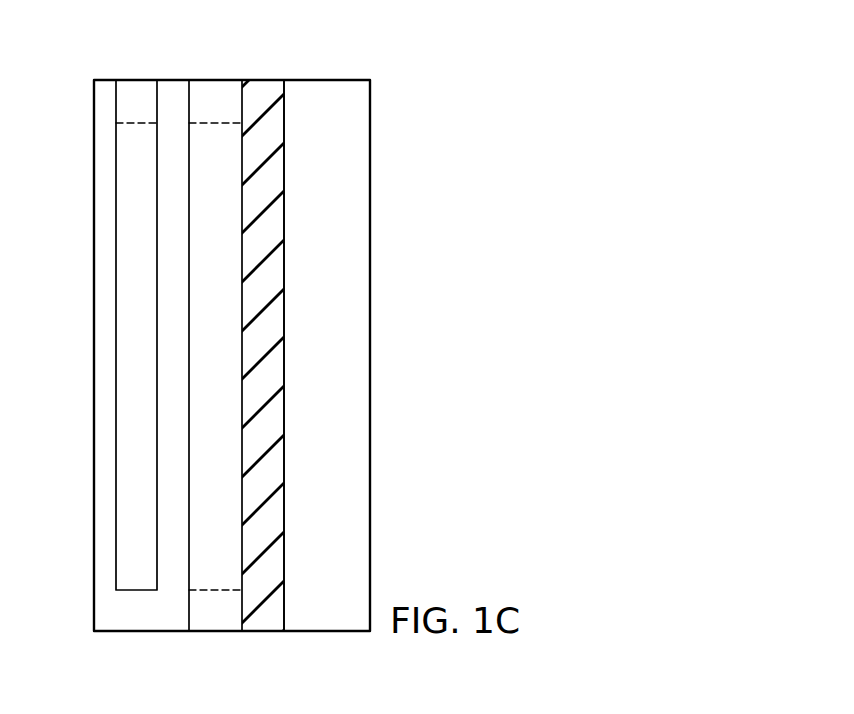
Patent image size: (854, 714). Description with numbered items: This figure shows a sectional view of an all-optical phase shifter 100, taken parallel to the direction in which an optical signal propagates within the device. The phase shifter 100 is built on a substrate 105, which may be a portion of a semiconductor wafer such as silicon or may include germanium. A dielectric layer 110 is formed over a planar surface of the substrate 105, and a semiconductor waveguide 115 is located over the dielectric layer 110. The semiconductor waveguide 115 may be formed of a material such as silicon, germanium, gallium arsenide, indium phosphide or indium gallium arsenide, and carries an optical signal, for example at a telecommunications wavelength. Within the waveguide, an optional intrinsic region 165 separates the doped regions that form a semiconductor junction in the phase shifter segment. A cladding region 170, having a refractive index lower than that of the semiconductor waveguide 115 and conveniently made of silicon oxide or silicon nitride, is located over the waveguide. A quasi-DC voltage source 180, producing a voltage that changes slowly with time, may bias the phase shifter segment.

The all-optical phase shifter 100 is at (418, 55).
The substrate 105 is at (328, 88).
The dielectric layer 110 is at (265, 622).
The semiconductor waveguide 115 is at (242, 70).
The intrinsic region 165 is at (189, 570).
The cladding region 170 is at (94, 356).
The quasi-DC voltage source 180 is at (135, 90).